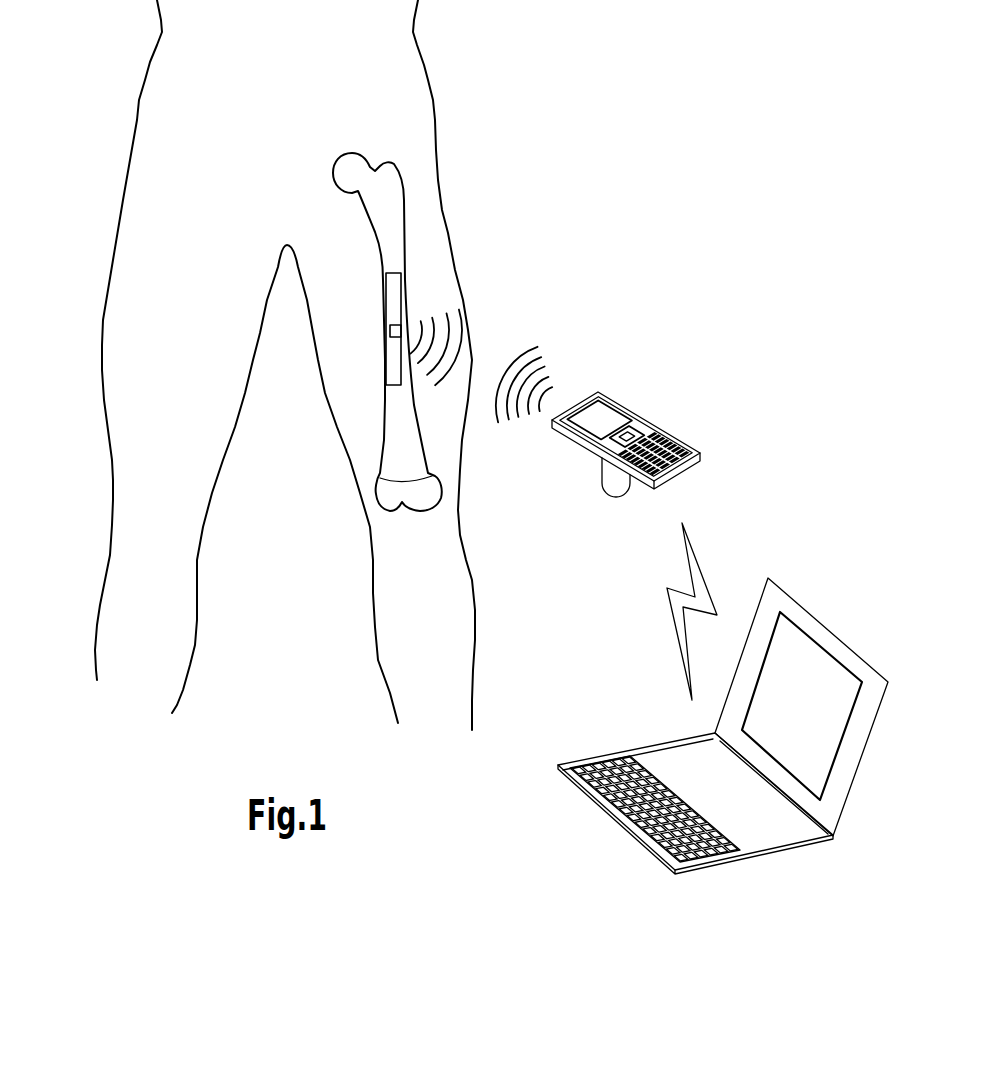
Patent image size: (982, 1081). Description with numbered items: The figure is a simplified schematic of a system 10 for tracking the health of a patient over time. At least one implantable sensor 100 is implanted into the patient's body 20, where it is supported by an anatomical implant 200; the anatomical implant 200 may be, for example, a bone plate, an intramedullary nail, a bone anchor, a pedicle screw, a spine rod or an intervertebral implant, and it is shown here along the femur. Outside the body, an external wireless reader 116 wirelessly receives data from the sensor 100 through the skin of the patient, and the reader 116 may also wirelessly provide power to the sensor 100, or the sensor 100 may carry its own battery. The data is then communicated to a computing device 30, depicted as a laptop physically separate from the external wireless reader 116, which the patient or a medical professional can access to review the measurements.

The system 10 is at (527, 712).
The patient's body 20 is at (142, 503).
The computing device 30 is at (763, 828).
The implantable sensor 100 is at (402, 328).
The external wireless reader 116 is at (683, 438).
The anatomical implant 200 is at (395, 290).